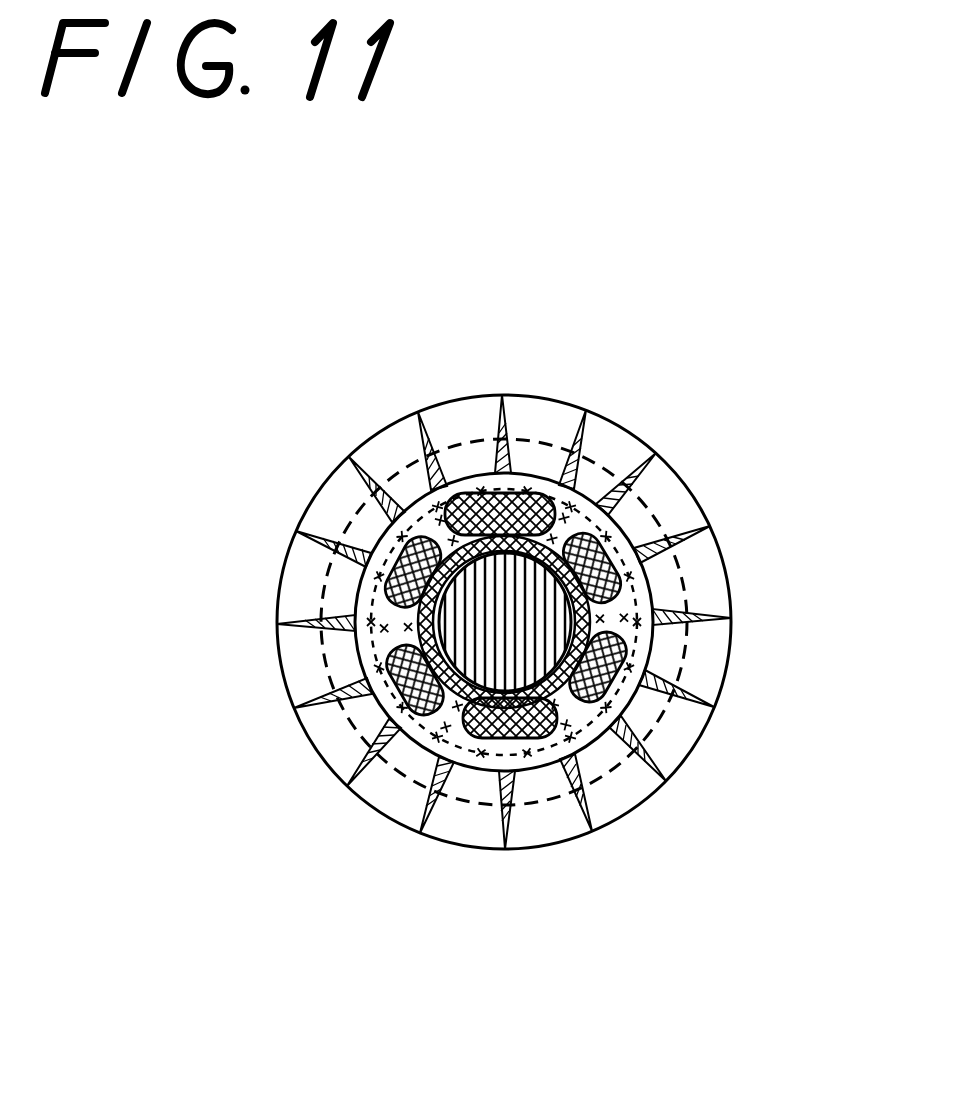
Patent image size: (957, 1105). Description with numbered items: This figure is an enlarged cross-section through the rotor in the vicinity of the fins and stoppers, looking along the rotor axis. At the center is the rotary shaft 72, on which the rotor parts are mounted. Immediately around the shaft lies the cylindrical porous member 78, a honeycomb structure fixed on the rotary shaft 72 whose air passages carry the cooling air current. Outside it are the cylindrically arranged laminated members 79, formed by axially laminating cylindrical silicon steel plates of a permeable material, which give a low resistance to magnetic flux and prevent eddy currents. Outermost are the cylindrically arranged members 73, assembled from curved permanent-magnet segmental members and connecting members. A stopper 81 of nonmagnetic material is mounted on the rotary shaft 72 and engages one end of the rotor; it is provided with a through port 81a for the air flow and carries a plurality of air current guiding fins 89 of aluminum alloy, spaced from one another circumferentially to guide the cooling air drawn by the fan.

The rotary shaft 72 is at (532, 606).
The cylindrically arranged members 73 is at (710, 657).
The cylindrical porous member 78 is at (430, 530).
The cylindrically arranged laminated members 79 is at (363, 713).
The stopper 81 is at (393, 797).
The through port 81a is at (400, 573).
The air current guiding fins 89 is at (594, 507).